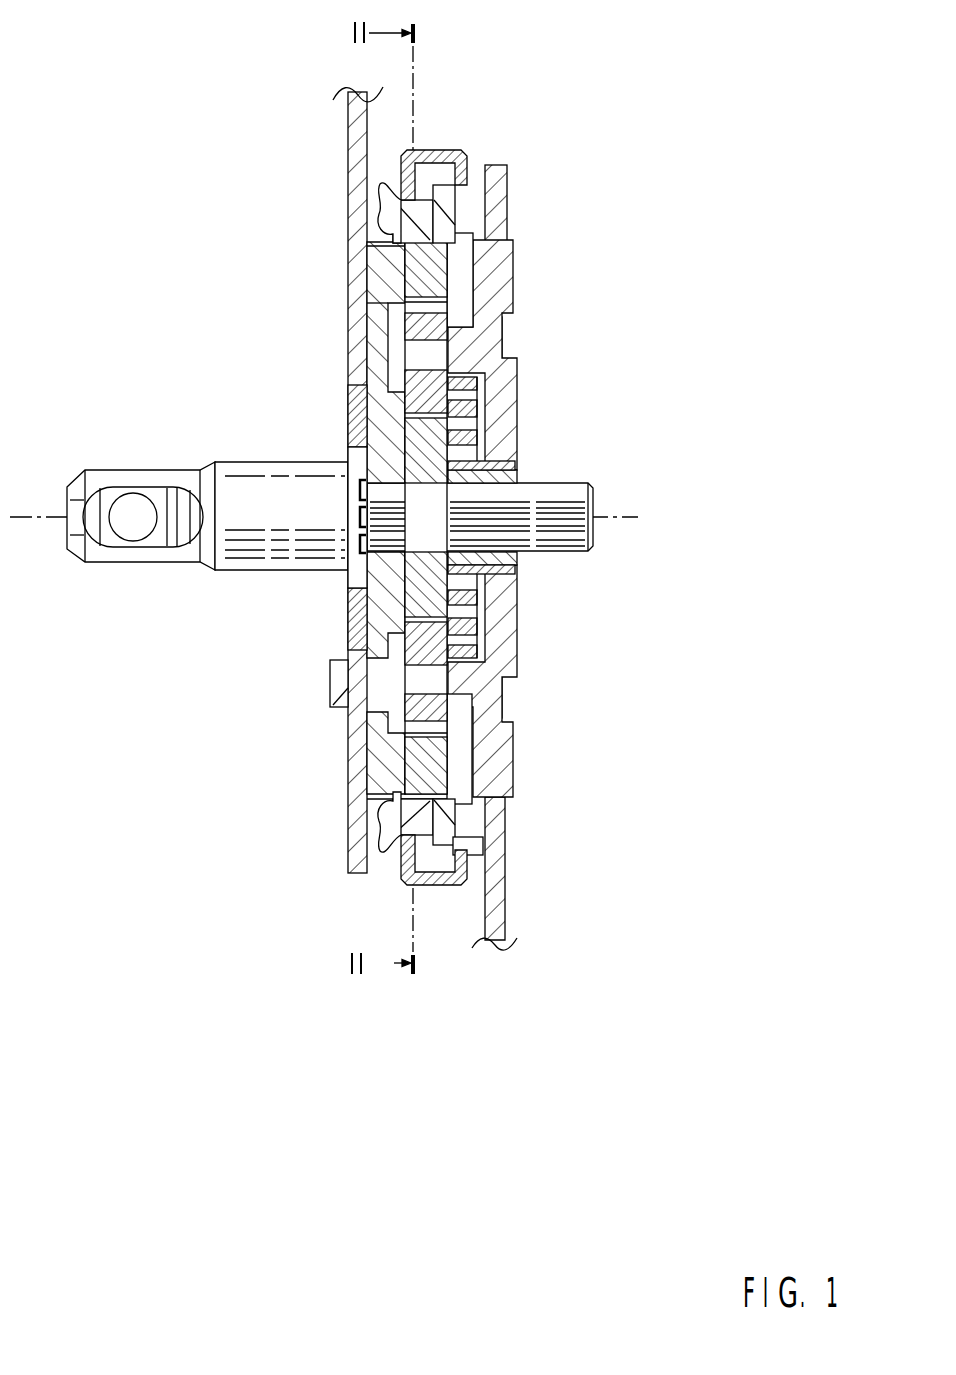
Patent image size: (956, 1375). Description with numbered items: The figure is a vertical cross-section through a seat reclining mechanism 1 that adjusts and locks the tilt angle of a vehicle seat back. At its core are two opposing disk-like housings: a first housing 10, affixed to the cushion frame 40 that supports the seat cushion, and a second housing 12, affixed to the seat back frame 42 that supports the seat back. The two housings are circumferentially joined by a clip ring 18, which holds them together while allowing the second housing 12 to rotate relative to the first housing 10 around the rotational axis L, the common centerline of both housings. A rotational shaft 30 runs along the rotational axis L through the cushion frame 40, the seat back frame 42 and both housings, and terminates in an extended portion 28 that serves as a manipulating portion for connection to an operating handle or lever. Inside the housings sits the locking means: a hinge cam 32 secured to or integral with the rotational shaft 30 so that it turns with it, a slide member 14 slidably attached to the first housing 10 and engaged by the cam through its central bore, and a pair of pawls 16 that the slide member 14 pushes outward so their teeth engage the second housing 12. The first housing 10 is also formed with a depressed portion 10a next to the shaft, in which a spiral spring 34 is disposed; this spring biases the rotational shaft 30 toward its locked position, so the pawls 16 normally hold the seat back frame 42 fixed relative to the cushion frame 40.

The seat reclining mechanism 1 is at (446, 93).
The first housing 10 is at (487, 342).
The depressed portion 10a is at (470, 648).
The second housing 12 is at (385, 403).
The slide member 14 is at (427, 617).
The pawls 16 is at (433, 267).
The clip ring 18 is at (443, 155).
The extended portion 28 is at (163, 480).
The rotational shaft 30 is at (557, 518).
The hinge cam 32 is at (487, 450).
The spiral spring 34 is at (480, 382).
The cushion frame 40 is at (500, 850).
The seat back frame 42 is at (350, 177).
The rotational axis L is at (333, 516).